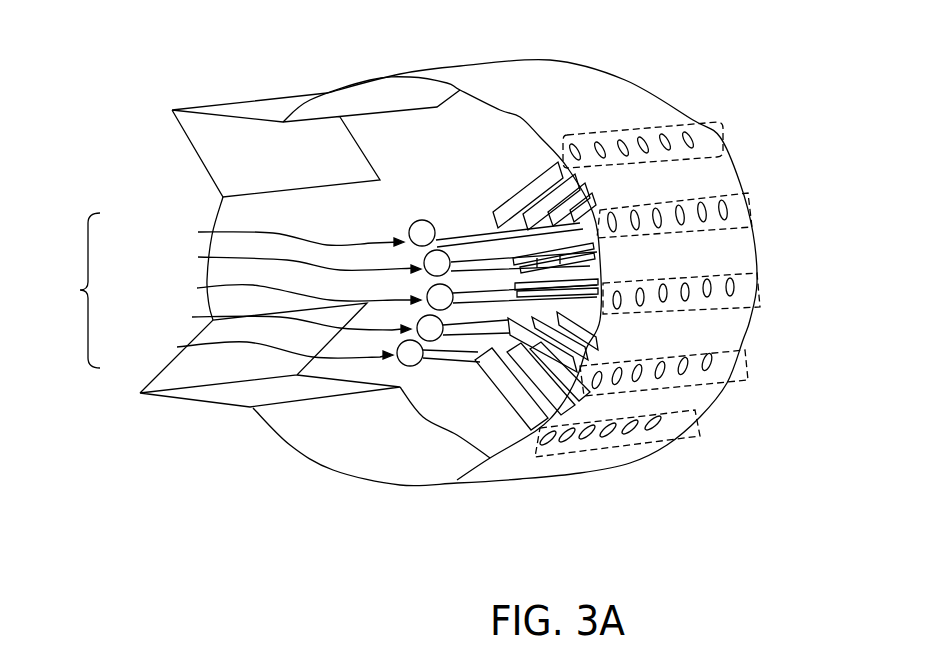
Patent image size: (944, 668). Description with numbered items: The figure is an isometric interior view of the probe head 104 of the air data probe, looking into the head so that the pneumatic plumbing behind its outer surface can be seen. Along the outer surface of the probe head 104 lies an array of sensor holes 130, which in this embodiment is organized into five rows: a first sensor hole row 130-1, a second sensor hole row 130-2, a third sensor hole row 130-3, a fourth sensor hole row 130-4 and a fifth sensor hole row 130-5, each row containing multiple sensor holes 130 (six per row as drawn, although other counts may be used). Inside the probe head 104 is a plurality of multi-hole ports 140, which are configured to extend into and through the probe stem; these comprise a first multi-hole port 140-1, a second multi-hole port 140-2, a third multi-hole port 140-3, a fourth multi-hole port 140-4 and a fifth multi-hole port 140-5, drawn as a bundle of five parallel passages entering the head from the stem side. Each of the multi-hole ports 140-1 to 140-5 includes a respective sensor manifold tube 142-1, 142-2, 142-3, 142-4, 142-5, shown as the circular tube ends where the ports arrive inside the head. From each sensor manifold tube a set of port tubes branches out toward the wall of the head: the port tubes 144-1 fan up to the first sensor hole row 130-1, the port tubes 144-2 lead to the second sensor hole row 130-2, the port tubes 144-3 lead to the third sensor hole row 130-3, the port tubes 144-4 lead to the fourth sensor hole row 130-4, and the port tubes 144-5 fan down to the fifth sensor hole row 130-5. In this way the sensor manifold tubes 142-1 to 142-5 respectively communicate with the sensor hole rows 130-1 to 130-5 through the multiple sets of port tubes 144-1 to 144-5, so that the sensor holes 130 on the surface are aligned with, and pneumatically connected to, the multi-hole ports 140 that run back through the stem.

The probe head 104 is at (598, 46).
The sensor holes 130 is at (633, 133).
The first sensor hole row 130-1 is at (720, 124).
The second sensor hole row 130-2 is at (754, 195).
The third sensor hole row 130-3 is at (763, 278).
The fourth sensor hole row 130-4 is at (742, 351).
The fifth sensor hole row 130-5 is at (702, 411).
The multi-hole ports 140 is at (62, 290).
The first multi-hole port 140-1 is at (263, 233).
The second multi-hole port 140-2 is at (270, 261).
The third multi-hole port 140-3 is at (269, 289).
The fourth multi-hole port 140-4 is at (261, 317).
The fifth multi-hole port 140-5 is at (245, 346).
The sensor manifold tube 142-1 is at (437, 228).
The sensor manifold tube 142-2 is at (472, 255).
The sensor manifold tube 142-3 is at (452, 312).
The sensor manifold tube 142-4 is at (446, 342).
The sensor manifold tube 142-5 is at (412, 368).
The port tubes 144-1 is at (555, 175).
The port tubes 144-2 is at (600, 203).
The port tubes 144-3 is at (600, 268).
The port tubes 144-4 is at (573, 343).
The port tubes 144-5 is at (503, 363).